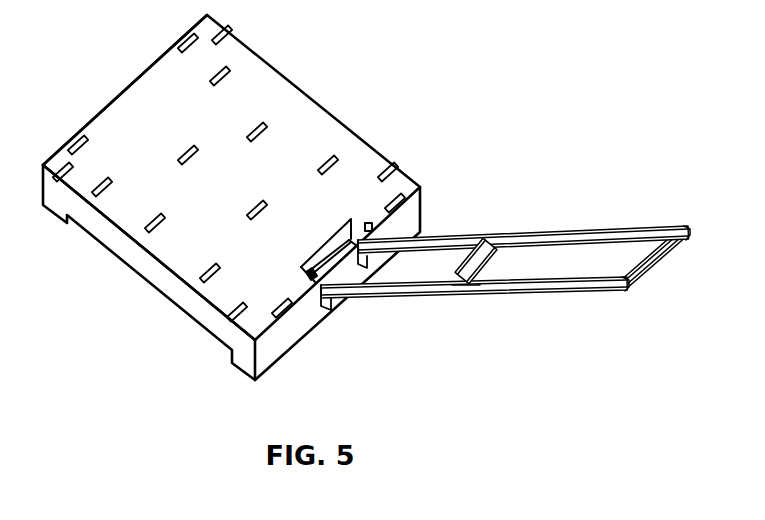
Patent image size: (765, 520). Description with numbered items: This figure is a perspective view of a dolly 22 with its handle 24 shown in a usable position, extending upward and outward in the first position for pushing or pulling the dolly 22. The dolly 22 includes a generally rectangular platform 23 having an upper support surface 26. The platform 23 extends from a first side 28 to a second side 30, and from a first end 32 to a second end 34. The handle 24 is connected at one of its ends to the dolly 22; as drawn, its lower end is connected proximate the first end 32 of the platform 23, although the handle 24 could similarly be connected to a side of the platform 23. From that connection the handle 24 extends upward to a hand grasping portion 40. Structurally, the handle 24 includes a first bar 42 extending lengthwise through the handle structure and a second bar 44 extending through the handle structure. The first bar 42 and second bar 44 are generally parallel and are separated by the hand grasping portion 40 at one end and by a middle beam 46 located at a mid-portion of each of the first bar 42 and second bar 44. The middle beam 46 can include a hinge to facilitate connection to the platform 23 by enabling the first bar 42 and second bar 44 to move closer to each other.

The dolly 22 is at (200, 300).
The platform 23 is at (140, 175).
The handle 24 is at (519, 290).
The upper support surface 26 is at (278, 257).
The first side 28 is at (157, 250).
The second side 30 is at (272, 64).
The first end 32 is at (284, 309).
The second end 34 is at (92, 118).
The hand grasping portion 40 is at (655, 258).
The first bar 42 is at (466, 286).
The second bar 44 is at (598, 228).
The middle beam 46 is at (497, 262).